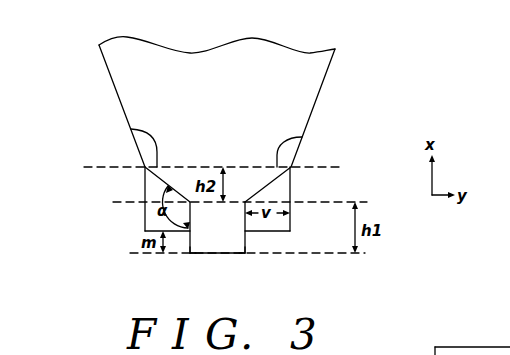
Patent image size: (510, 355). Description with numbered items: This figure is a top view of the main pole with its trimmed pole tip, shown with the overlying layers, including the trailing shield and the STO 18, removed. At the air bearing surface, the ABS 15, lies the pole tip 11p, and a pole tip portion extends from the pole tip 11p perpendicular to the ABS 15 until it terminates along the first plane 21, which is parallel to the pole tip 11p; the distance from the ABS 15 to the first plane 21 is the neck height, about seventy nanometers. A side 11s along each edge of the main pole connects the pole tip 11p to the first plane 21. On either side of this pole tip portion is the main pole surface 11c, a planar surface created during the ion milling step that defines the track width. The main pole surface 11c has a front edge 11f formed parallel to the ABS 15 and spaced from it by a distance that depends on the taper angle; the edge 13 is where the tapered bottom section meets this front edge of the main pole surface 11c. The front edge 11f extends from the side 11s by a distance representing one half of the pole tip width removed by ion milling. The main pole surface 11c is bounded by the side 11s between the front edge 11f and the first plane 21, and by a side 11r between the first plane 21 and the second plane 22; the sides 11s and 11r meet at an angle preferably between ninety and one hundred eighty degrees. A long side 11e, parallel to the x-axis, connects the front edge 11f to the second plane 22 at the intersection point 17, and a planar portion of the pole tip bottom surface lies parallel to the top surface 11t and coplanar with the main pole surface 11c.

The top surface 11t is at (303, 77).
The side 11r is at (132, 129).
The intersection point 17 is at (293, 166).
The second plane 22 is at (214, 169).
The long side 11e is at (144, 187).
The first plane 21 is at (239, 205).
The main pole surface 11c is at (145, 222).
The edge 13 is at (250, 232).
The front edge 11f is at (252, 236).
The pole tip 11p is at (218, 254).
The side 11s is at (190, 246).
The air bearing surface (ABS) 15 is at (242, 257).
The STO 18 is at (498, 354).